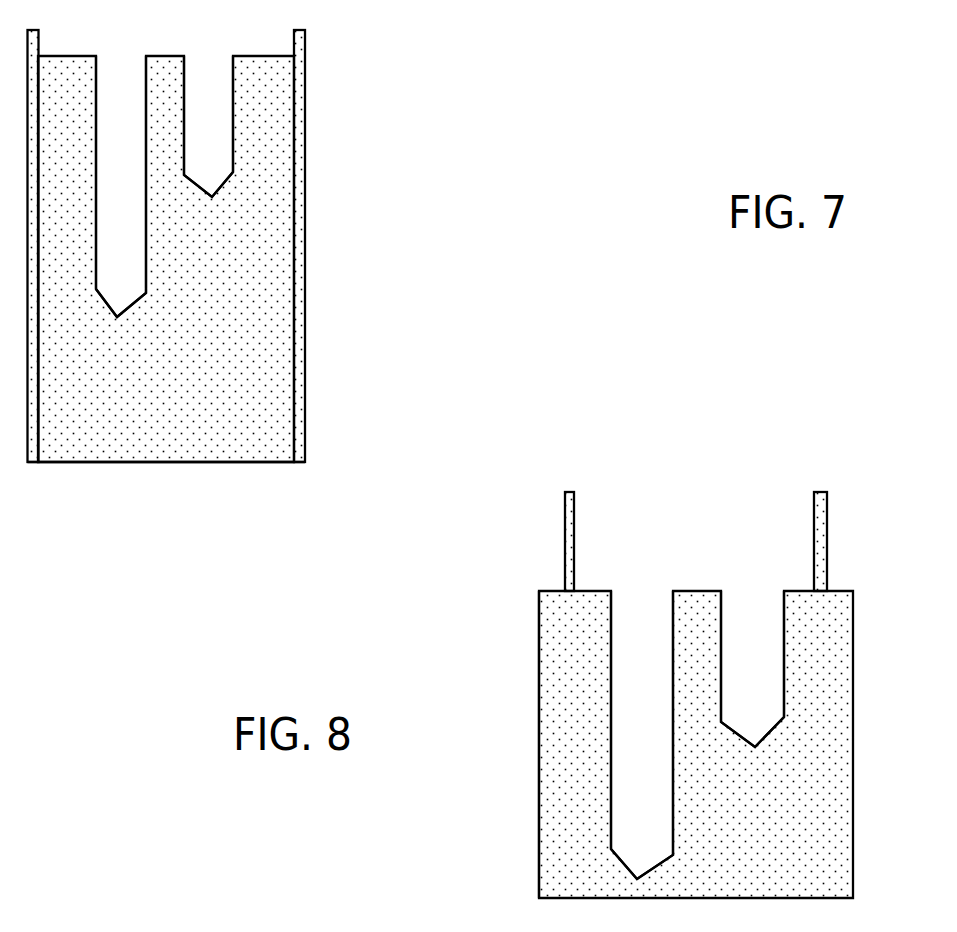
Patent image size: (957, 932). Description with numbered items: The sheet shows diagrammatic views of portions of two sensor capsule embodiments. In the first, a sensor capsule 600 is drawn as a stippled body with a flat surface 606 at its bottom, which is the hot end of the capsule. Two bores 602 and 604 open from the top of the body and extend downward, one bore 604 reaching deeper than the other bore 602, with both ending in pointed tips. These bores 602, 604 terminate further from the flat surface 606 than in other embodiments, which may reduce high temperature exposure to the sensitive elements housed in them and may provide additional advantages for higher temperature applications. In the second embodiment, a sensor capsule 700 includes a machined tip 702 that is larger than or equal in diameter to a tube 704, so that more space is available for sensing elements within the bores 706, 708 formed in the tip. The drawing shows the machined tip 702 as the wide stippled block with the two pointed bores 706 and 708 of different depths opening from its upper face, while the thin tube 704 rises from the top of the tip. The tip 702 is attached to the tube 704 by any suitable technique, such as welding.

In FIG. 7, the sensor capsule 600 is at (305, 181).
In FIG. 7, the bore 602 is at (184, 144).
In FIG. 7, the bore 604 is at (96, 144).
In FIG. 7, the flat surface 606 is at (263, 462).
In FIG. 8, the sensor capsule 700 is at (854, 620).
In FIG. 8, the machined tip 702 is at (539, 835).
In FIG. 8, the tube 704 is at (827, 515).
In FIG. 8, the bore 706 is at (723, 612).
In FIG. 8, the bore 708 is at (611, 612).